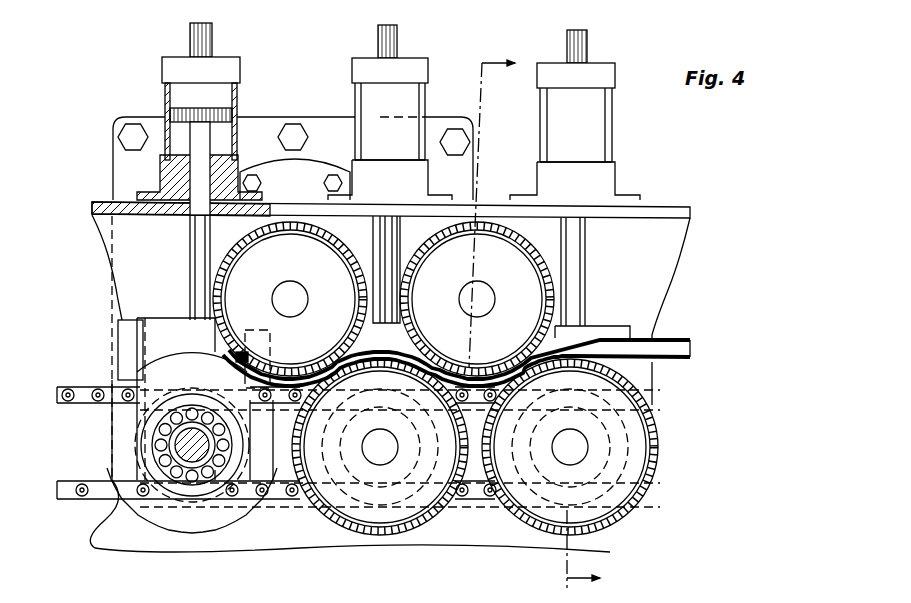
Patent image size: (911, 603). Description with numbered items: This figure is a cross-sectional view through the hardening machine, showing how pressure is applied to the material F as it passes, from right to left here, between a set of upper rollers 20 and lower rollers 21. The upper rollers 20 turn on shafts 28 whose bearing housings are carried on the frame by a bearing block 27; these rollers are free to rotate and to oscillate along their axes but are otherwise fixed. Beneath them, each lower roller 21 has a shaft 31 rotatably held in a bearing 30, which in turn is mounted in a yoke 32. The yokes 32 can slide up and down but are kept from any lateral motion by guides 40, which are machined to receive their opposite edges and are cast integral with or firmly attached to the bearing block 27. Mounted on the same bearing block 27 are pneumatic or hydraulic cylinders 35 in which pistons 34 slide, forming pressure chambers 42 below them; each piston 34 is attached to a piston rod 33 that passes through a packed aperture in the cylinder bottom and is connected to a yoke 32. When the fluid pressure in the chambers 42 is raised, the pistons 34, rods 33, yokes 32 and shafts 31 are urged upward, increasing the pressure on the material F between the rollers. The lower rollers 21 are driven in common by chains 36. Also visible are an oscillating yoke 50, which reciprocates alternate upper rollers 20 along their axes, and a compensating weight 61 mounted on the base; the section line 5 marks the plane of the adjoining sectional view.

The upper roller 20 is at (295, 228).
The lower roller 21 is at (437, 513).
The bearing block 27 is at (100, 228).
The shaft 28 is at (294, 291).
The bearing 30 is at (210, 402).
The shaft 31 is at (192, 438).
The yoke 32 is at (174, 322).
The piston rod 33 is at (190, 243).
The piston 34 is at (172, 108).
The pneumatic cylinder 35 is at (243, 80).
The chain 36 is at (60, 402).
The guide 40 is at (118, 352).
The pressure chamber 42 is at (222, 134).
The oscillating yoke 50 is at (313, 168).
The compensating weight 61 is at (283, 116).
The material F is at (698, 352).
The section line 5- 5 is at (526, 322).